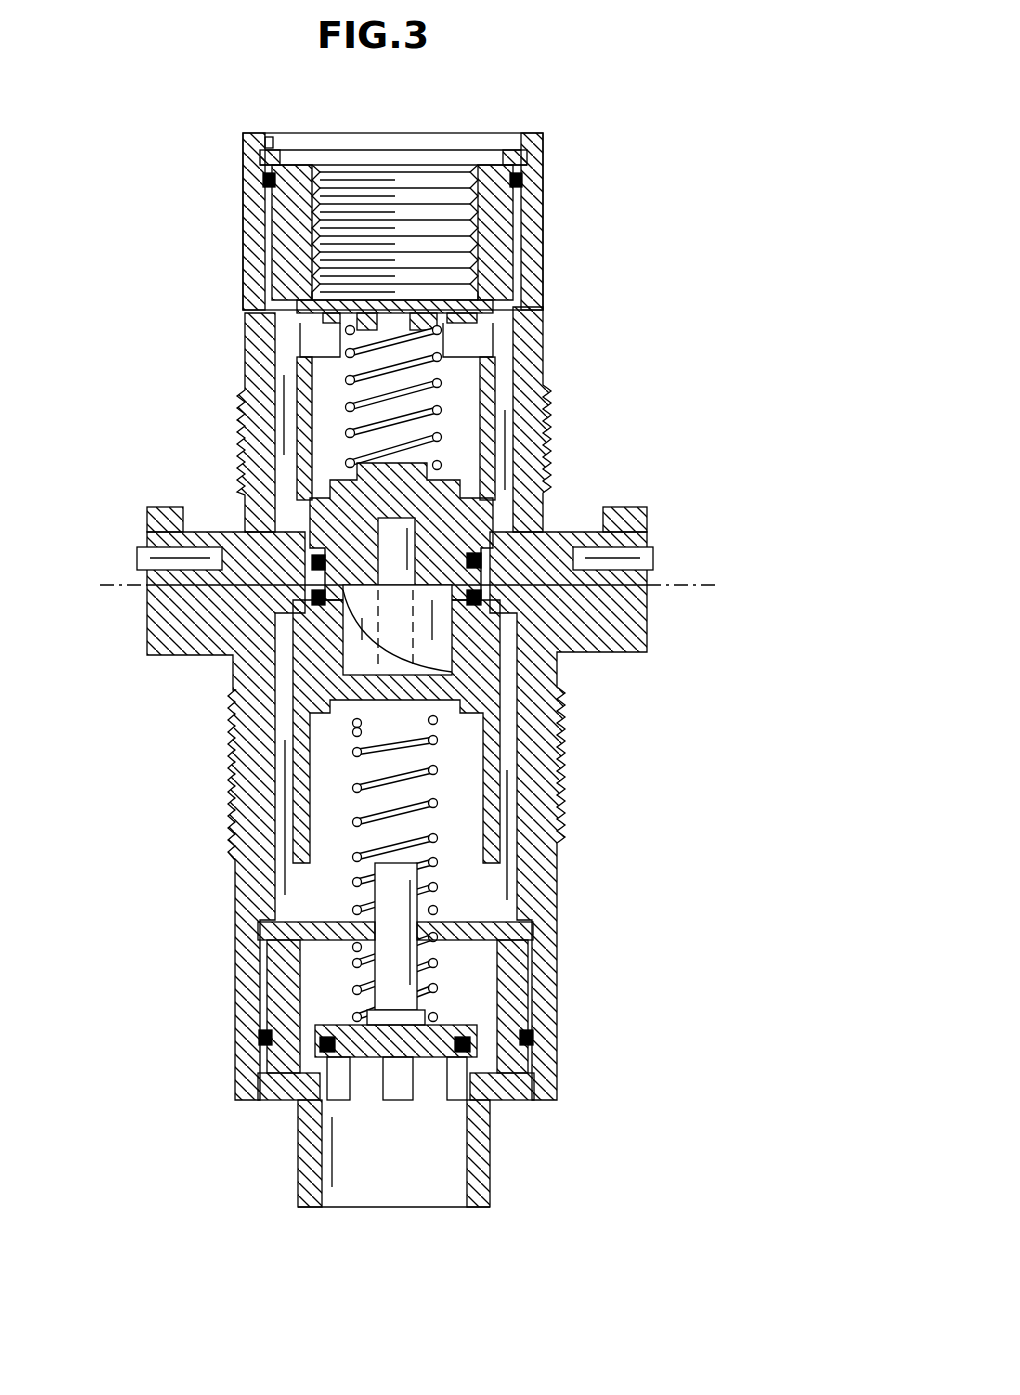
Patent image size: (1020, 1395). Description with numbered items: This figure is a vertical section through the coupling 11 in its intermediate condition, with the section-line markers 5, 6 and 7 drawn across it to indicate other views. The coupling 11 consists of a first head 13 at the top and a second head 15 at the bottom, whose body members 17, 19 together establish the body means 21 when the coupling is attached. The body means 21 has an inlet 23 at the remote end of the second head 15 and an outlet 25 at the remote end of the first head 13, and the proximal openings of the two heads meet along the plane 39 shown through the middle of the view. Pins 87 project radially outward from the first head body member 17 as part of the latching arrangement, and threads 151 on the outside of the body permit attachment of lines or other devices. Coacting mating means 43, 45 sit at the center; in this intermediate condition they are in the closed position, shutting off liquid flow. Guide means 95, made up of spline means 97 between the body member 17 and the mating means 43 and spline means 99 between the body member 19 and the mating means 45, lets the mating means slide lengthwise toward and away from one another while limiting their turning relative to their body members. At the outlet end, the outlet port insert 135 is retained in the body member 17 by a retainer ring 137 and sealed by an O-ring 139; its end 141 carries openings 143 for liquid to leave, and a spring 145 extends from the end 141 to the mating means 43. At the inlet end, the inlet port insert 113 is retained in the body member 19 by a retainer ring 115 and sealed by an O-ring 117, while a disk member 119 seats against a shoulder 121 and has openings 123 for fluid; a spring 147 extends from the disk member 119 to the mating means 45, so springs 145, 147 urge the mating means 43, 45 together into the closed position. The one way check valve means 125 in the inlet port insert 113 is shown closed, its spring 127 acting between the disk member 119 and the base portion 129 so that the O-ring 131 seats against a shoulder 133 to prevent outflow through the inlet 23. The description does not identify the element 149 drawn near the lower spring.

The coupling 11 is at (690, 195).
The first head 13 is at (553, 261).
The second head 15 is at (573, 925).
The first head body member 17 is at (530, 330).
The second head body member 19 is at (242, 878).
The body means 21 is at (634, 484).
The inlet 23 is at (363, 1222).
The outlet 25 is at (492, 127).
The joining plane 39 is at (122, 582).
The mating means 43 is at (318, 545).
The mating means 45 is at (325, 618).
The section line 5 is at (333, 633).
The section line 6 is at (227, 397).
The section line 7 is at (210, 784).
The pins 87 is at (655, 556).
The guide means 95 is at (486, 349).
The spline means 97 is at (527, 369).
The spline means 99 is at (530, 700).
The inlet port insert 113 is at (533, 990).
The retainer ring 115 is at (528, 1071).
The O-ring 117 is at (533, 1030).
The disk member 119 is at (525, 918).
The shoulder 121 is at (260, 924).
The openings 123 is at (438, 935).
The one way check valve means 125 is at (397, 1135).
The spring 127 is at (354, 958).
The base portion 129 is at (338, 1010).
The O-ring 131 is at (456, 1058).
The shoulder 133 is at (322, 1042).
The outlet port insert 135 is at (497, 228).
The retainer ring 137 is at (272, 133).
The O-ring 139 is at (520, 178).
The end 141 is at (321, 340).
The openings 143 is at (495, 297).
The spring 145 is at (347, 380).
The spring 147 is at (355, 872).
The spring end 149 is at (400, 862).
The threads 151 is at (440, 190).